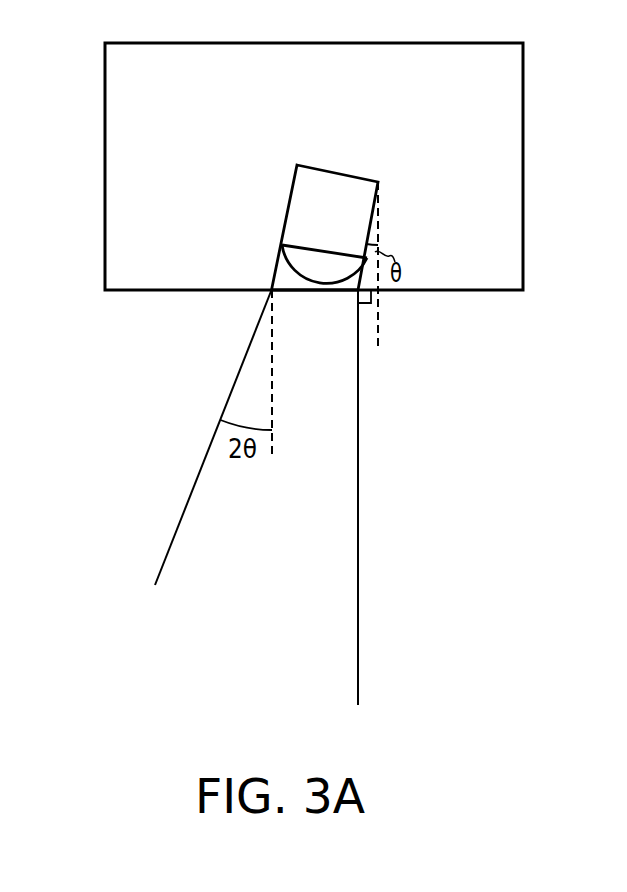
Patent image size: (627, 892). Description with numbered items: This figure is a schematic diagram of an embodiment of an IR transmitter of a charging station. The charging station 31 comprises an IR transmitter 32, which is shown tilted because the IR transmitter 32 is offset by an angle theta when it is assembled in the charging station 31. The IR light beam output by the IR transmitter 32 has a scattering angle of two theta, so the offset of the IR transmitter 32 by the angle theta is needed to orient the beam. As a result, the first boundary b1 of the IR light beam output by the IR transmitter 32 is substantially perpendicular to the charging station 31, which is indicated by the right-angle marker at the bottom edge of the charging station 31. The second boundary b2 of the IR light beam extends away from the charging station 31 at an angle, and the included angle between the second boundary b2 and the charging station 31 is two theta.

The charging station 31 is at (523, 164).
The IR transmitter 32 is at (287, 205).
The first boundary b1 is at (360, 514).
The second boundary b2 is at (206, 456).